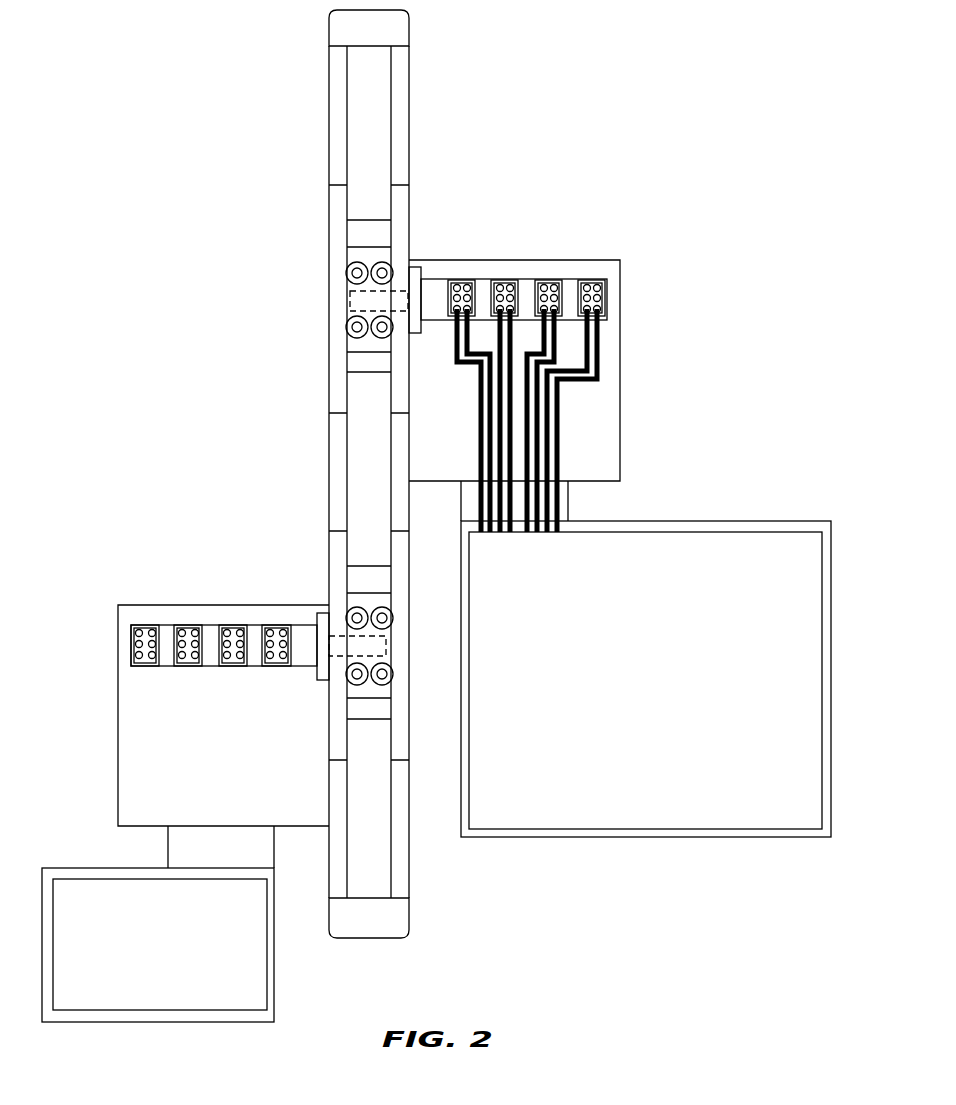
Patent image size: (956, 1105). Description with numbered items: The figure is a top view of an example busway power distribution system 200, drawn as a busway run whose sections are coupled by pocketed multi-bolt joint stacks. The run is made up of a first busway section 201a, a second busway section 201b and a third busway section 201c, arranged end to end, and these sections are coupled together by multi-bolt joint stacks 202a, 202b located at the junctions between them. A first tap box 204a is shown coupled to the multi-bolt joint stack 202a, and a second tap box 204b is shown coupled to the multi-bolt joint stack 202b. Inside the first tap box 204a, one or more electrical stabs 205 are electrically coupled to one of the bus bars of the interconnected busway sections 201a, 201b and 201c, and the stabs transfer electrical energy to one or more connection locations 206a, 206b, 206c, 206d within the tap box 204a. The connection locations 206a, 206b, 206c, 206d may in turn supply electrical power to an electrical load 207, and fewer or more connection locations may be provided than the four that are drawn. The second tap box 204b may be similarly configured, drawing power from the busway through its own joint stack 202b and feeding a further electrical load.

The busway power distribution system 200 is at (586, 68).
The first busway section 201a is at (367, 107).
The second busway section 201b is at (362, 473).
The third busway section 201c is at (373, 840).
The multi-bolt joint stack 202a is at (308, 303).
The multi-bolt joint stack 202b is at (313, 583).
The first tap box 204a is at (620, 388).
The second tap box 204b is at (165, 605).
The electrical stab 205 is at (350, 301).
The connection location 206a is at (467, 280).
The connection location 206b is at (508, 280).
The connection location 206c is at (545, 280).
The connection location 206d is at (593, 280).
The electrical load 207 is at (718, 837).